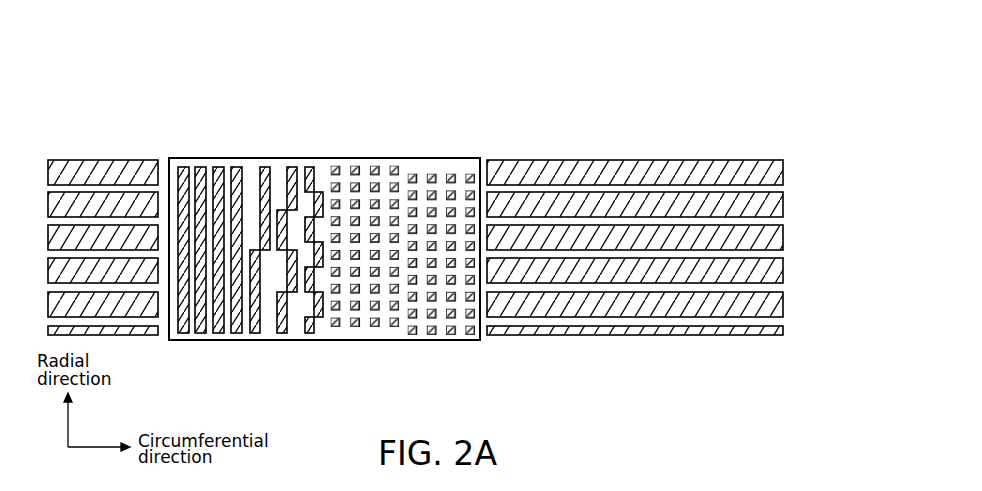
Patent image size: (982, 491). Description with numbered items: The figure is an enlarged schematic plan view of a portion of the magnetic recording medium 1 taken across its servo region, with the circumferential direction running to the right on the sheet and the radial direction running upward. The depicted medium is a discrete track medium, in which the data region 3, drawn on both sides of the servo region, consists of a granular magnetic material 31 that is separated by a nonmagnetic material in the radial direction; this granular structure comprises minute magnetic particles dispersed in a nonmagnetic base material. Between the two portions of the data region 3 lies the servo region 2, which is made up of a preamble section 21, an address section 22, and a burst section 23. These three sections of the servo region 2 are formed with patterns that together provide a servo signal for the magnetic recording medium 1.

The magnetic recording medium 1 is at (100, 88).
The servo region 2 is at (472, 147).
The data region 3 is at (45, 147).
The preamble section 21 is at (175, 343).
The address section 22 is at (250, 343).
The burst section 23 is at (330, 343).
The granular magnetic material 31 is at (783, 162).